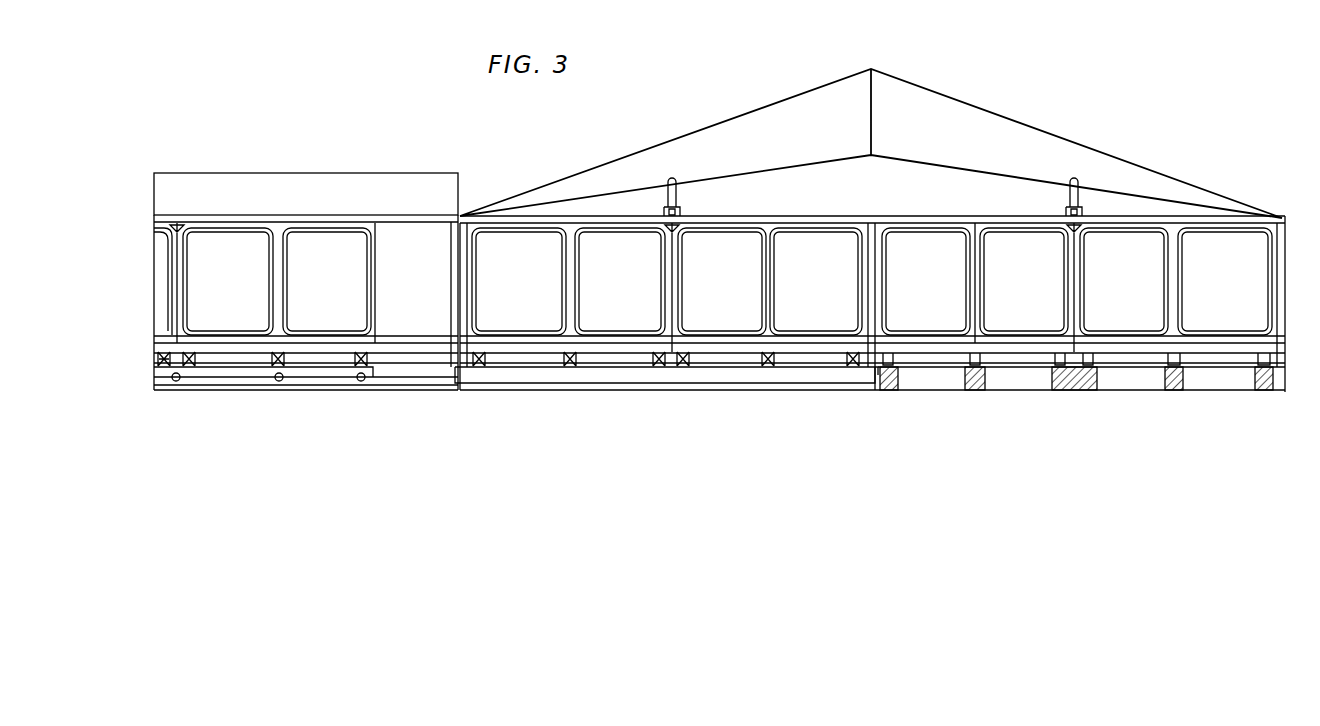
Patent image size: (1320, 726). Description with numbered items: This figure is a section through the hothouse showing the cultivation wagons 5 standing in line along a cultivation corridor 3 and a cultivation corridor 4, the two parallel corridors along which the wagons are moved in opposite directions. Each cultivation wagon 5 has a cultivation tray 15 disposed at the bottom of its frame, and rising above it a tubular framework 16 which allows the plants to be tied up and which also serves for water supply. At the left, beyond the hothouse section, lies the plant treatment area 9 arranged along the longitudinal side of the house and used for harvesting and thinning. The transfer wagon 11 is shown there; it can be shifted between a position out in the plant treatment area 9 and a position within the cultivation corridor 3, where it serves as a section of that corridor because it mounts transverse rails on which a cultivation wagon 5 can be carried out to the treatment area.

The cultivation corridor 3 is at (666, 409).
The cultivation corridor 4 is at (1081, 403).
The cultivation wagon 5 is at (719, 398).
The plant treatment area 9 is at (306, 160).
The transfer wagon 11 is at (506, 397).
The cultivation tray 15 is at (713, 285).
The tubular framework 16 is at (626, 265).